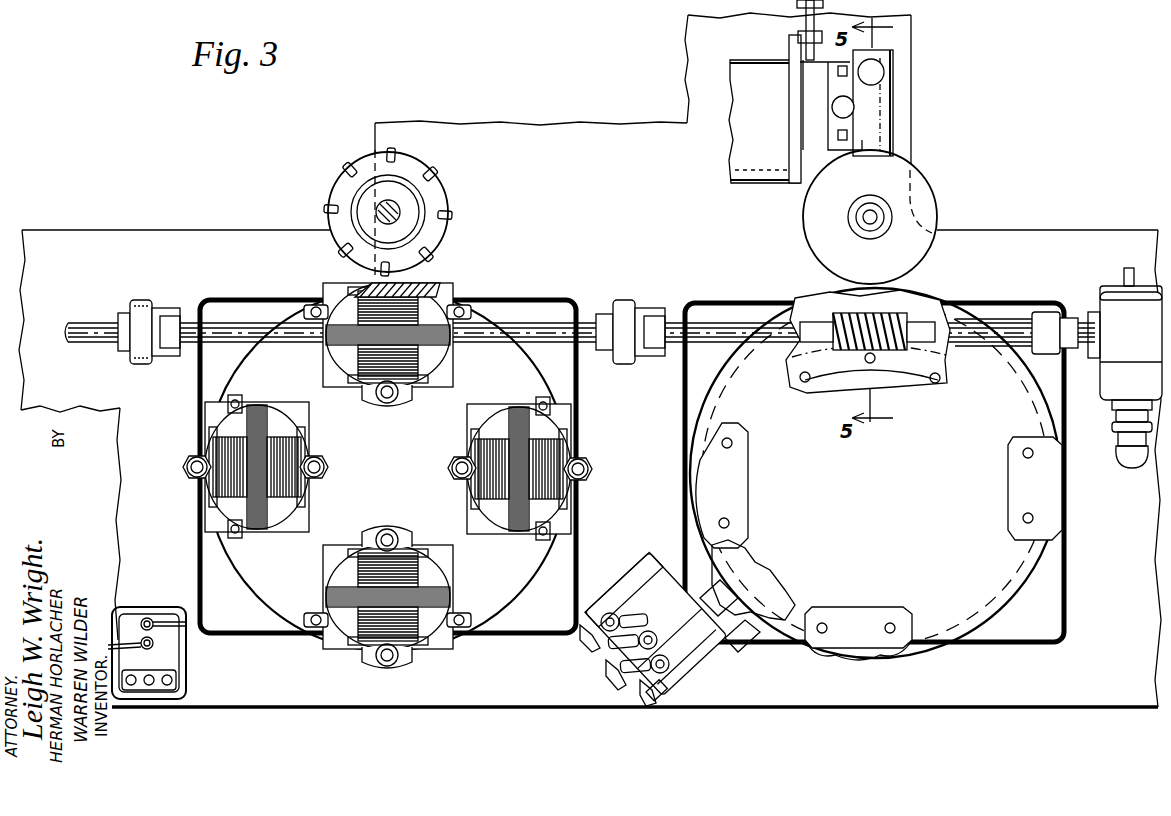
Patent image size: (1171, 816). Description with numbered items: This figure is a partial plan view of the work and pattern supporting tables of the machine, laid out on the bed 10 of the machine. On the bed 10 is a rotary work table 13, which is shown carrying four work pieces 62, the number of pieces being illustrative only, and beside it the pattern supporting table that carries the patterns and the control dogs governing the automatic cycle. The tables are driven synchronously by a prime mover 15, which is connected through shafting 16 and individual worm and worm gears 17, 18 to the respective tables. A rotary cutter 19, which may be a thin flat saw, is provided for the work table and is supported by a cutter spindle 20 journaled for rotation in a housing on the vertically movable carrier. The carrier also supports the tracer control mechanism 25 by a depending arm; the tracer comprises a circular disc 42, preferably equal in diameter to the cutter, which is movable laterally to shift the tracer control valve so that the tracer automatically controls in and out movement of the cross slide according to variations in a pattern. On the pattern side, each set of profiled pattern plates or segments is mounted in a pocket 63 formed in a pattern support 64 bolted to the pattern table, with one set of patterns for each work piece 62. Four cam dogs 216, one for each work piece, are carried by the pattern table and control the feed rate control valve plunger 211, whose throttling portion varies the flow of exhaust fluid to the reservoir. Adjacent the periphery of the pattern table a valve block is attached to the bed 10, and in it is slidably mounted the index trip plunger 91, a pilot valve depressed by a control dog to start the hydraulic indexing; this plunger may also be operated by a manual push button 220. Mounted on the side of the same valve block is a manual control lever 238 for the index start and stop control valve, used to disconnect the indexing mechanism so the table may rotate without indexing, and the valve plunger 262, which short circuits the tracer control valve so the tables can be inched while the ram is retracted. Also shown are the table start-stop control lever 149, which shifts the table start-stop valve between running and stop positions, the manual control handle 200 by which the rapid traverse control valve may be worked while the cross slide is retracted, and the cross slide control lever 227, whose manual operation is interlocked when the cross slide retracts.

The bed 10 is at (312, 698).
The work table 13 is at (266, 588).
The prime mover 15 is at (1118, 305).
The shafting 16 is at (1010, 324).
The worm 17 is at (903, 320).
The worm gear 18 is at (920, 368).
The rotary cutter 19 is at (352, 186).
The cutter spindle 20 is at (380, 210).
The tracer control mechanism 25 is at (815, 78).
The tracer disc 42 is at (930, 198).
The work piece 62 is at (440, 286).
The pocket 63 is at (728, 422).
The pattern support 64 is at (1030, 568).
The index trip plunger 91 is at (728, 604).
The table start-stop control lever 149 is at (618, 676).
The manual control handle 200 is at (608, 656).
The feed rate control valve plunger 211 is at (722, 592).
The cam dog 216 is at (700, 548).
The manual push button 220 is at (598, 650).
The cross slide control lever 227 is at (648, 616).
The manual control lever 238 is at (655, 705).
The valve plunger 262 is at (586, 632).